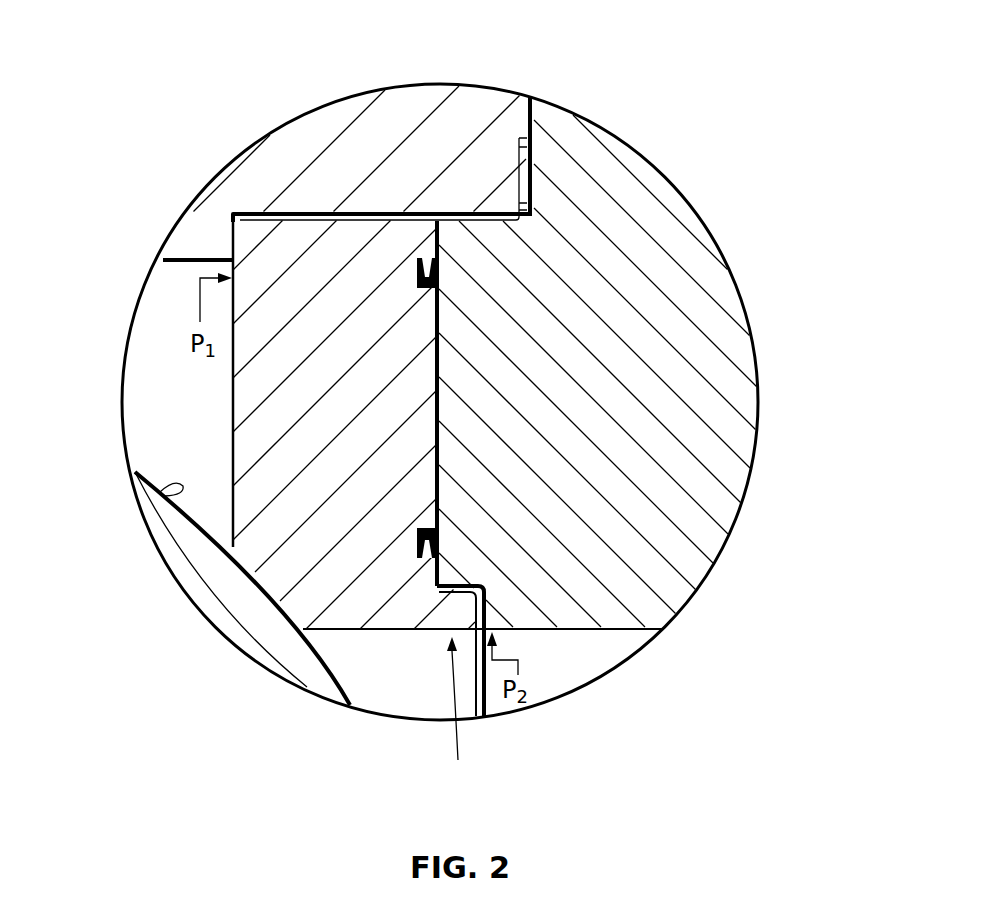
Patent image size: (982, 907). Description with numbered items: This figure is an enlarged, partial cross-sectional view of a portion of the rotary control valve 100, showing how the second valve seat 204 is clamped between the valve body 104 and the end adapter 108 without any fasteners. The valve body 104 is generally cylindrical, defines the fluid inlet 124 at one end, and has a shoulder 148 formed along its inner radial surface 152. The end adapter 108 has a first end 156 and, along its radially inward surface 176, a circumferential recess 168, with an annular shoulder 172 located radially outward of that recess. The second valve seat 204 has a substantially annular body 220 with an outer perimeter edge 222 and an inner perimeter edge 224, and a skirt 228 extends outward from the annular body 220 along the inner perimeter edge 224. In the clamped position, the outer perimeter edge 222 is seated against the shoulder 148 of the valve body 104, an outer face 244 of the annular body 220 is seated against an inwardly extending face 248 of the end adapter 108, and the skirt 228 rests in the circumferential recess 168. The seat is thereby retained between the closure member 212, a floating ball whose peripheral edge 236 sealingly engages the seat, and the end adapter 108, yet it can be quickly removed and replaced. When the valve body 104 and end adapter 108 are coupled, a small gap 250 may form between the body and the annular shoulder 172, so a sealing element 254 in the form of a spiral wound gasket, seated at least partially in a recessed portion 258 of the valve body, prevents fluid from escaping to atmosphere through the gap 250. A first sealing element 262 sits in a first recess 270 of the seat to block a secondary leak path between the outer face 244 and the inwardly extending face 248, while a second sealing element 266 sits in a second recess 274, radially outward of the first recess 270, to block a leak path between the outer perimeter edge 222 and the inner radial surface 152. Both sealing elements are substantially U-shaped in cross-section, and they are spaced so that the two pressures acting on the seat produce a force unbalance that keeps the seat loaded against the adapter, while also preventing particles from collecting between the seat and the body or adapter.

The rotary control valve 100 is at (700, 43).
The valve body 104 is at (352, 136).
The end adapter 108 is at (720, 330).
The fluid inlet 124 is at (517, 113).
The shoulder 148 is at (410, 211).
The inner radial surface 152 is at (118, 289).
The first end 156 is at (437, 453).
The circumferential recess 168 is at (490, 603).
The annular shoulder 172 is at (577, 118).
The radially inward surface 176 is at (580, 630).
The second valve seat 204 is at (215, 399).
The closure member 212 is at (222, 615).
The annular body 220 is at (272, 432).
The outer perimeter edge 222 is at (232, 216).
The inner perimeter edge 224 is at (380, 630).
The skirt 228 is at (460, 714).
The peripheral edge 236 is at (160, 490).
The outer face 244 is at (437, 313).
The inwardly extending face 248 is at (615, 471).
The gap 250 is at (531, 97).
The sealing element 254 is at (503, 130).
The recessed portion 258 is at (517, 179).
The first sealing element 262 is at (440, 541).
The second sealing element 266 is at (399, 254).
The first recess 270 is at (418, 541).
The second recess 274 is at (330, 170).